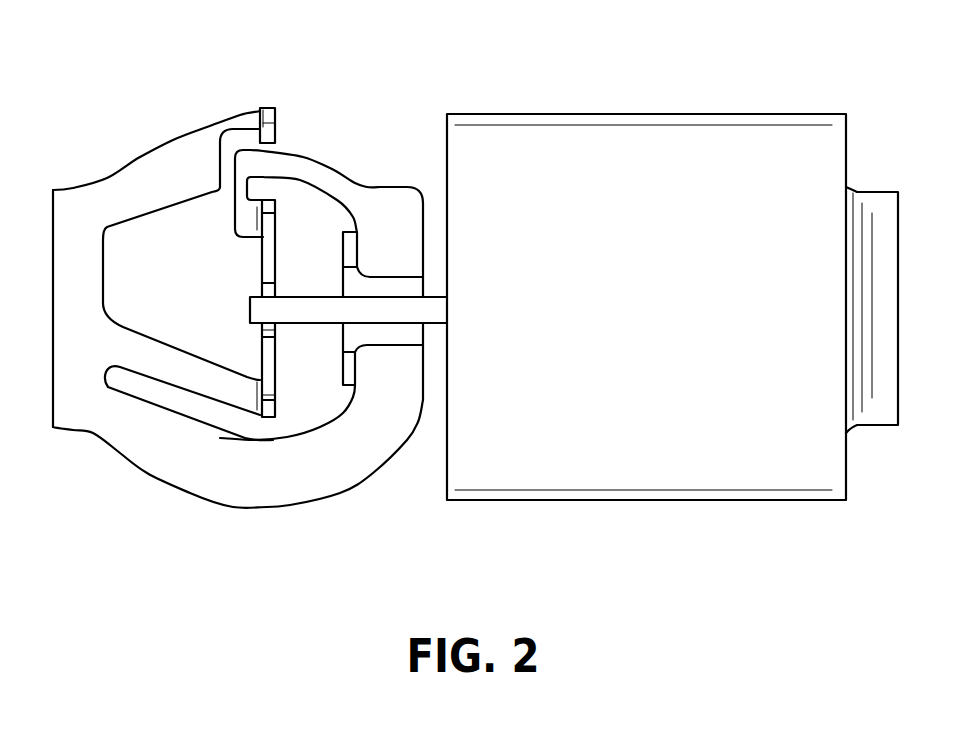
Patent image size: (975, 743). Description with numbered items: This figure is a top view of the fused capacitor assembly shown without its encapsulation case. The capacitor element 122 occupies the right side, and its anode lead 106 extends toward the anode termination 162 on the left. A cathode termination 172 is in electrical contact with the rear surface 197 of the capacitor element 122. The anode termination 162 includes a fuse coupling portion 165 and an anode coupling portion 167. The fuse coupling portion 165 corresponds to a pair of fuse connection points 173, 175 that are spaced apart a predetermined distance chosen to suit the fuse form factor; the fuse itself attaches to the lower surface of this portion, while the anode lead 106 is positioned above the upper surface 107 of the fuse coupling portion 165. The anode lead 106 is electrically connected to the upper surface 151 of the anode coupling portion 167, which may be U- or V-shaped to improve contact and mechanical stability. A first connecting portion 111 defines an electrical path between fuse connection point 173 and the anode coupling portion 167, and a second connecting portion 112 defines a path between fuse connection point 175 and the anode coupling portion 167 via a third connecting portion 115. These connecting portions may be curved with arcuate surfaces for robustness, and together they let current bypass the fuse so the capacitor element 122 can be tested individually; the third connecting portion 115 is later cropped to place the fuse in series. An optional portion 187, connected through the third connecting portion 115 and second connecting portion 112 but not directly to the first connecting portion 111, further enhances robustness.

The optional portion 187 is at (161, 146).
The third connecting portion 115 is at (150, 368).
The anode termination 162 is at (205, 527).
The second connecting portion 112 is at (312, 483).
The first connecting portion 111 is at (300, 163).
The fuse coupling portion 165 is at (375, 172).
The upper surface 107 is at (401, 250).
The fuse connection point 173 is at (368, 248).
The fuse connection point 175 is at (377, 368).
The anode coupling portion 167 is at (245, 263).
The upper surface 151 is at (267, 330).
The anode lead 106 is at (437, 327).
The capacitor element 122 is at (657, 167).
The rear surface 197 is at (846, 157).
The cathode termination 172 is at (888, 440).